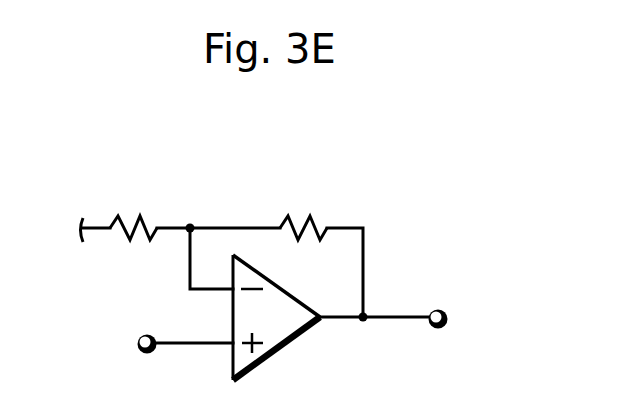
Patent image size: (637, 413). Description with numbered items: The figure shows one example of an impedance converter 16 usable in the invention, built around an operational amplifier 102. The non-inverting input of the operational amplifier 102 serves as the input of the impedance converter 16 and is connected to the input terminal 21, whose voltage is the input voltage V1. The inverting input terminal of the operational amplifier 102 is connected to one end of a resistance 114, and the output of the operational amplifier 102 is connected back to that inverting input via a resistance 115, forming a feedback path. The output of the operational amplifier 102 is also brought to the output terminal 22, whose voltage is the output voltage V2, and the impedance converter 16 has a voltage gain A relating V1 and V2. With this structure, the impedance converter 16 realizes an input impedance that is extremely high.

The impedance converter 16 is at (296, 156).
The resistance 114 is at (108, 226).
The resistance 115 is at (311, 216).
The operational amplifier 102 is at (285, 290).
The input terminal 21 is at (137, 335).
The output terminal 22 is at (441, 309).